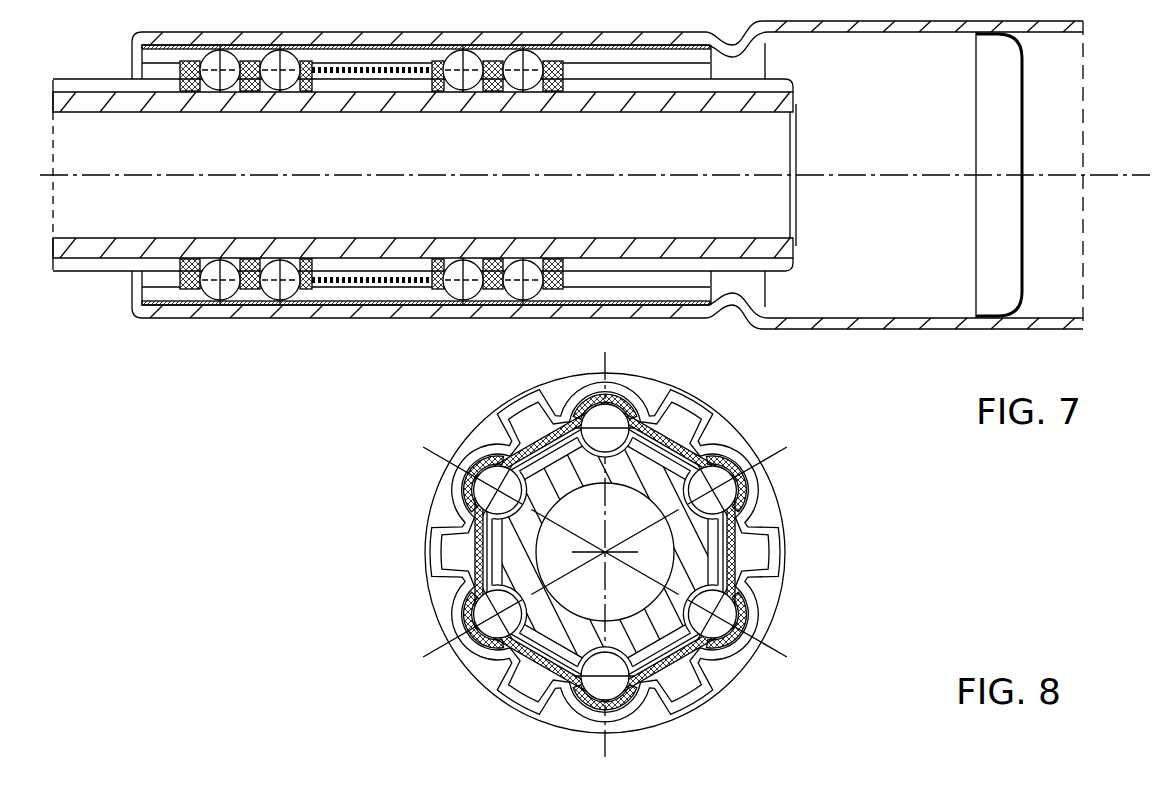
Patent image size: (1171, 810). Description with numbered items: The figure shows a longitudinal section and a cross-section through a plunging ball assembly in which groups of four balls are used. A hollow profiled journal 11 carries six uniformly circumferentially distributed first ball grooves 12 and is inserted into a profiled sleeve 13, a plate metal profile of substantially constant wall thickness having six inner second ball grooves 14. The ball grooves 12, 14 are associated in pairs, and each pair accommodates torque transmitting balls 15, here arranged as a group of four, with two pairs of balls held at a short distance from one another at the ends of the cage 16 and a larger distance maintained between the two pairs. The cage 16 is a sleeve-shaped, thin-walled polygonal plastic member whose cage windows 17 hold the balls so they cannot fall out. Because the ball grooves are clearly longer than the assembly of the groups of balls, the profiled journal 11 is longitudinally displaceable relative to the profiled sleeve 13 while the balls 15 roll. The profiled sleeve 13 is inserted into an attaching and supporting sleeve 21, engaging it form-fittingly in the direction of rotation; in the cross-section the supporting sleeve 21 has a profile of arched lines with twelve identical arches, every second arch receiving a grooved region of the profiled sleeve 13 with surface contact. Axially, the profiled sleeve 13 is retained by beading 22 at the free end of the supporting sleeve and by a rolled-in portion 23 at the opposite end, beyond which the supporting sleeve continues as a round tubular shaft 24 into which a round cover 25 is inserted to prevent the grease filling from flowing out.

In FIG. 7, the profiled journal 11 is at (87, 252).
In FIG. 8, the profiled journal 11 is at (470, 580).
In FIG. 7, the first ball grooves 12 is at (108, 268).
In FIG. 8, the first ball grooves 12 is at (468, 624).
In FIG. 7, the profiled sleeve 13 is at (390, 303).
In FIG. 8, the profiled sleeve 13 is at (755, 598).
In FIG. 7, the second ball grooves 14 is at (420, 297).
In FIG. 8, the second ball grooves 14 is at (745, 628).
In FIG. 7, the torque transmitting ball 15 is at (215, 293).
In FIG. 8, the torque transmitting ball 15 is at (468, 489).
In FIG. 7, the cage 16 is at (248, 290).
In FIG. 8, the cage 16 is at (432, 560).
In FIG. 7, the cage windows 17 is at (280, 253).
In FIG. 8, the cage windows 17 is at (463, 516).
In FIG. 7, the supporting sleeve 21 is at (683, 312).
In FIG. 8, the supporting sleeve 21 is at (765, 531).
In FIG. 7, the beading 22 is at (140, 309).
In FIG. 7, the rolled-in portion 23 is at (738, 298).
In FIG. 7, the tubular shaft 24 is at (882, 318).
In FIG. 8, the tubular shaft 24 is at (783, 576).
In FIG. 7, the cover 25 is at (1005, 320).